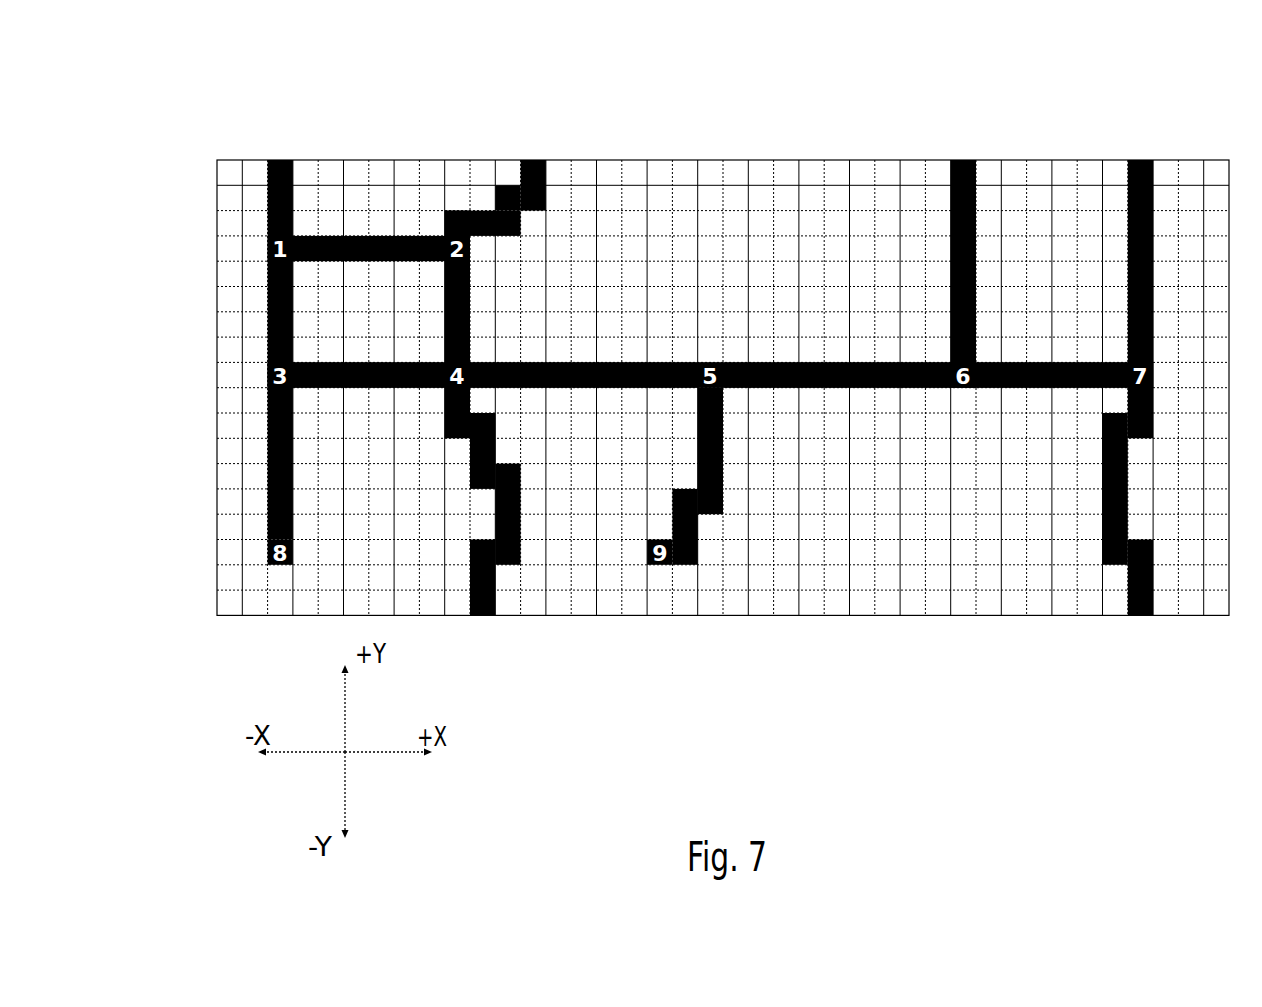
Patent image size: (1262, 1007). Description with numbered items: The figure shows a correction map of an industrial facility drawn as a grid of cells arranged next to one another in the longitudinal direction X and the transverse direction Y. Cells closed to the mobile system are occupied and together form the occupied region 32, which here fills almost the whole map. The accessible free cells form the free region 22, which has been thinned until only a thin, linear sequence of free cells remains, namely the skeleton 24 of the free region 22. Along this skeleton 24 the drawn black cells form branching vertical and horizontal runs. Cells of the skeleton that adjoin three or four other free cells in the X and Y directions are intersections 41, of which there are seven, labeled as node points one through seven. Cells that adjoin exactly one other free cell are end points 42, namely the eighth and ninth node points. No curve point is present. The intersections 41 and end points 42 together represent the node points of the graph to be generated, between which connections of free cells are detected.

The free region 22 is at (842, 362).
The skeleton 24 is at (842, 362).
The occupied region 32 is at (862, 550).
The intersections 41 is at (710, 362).
The end points 42 is at (268, 557).